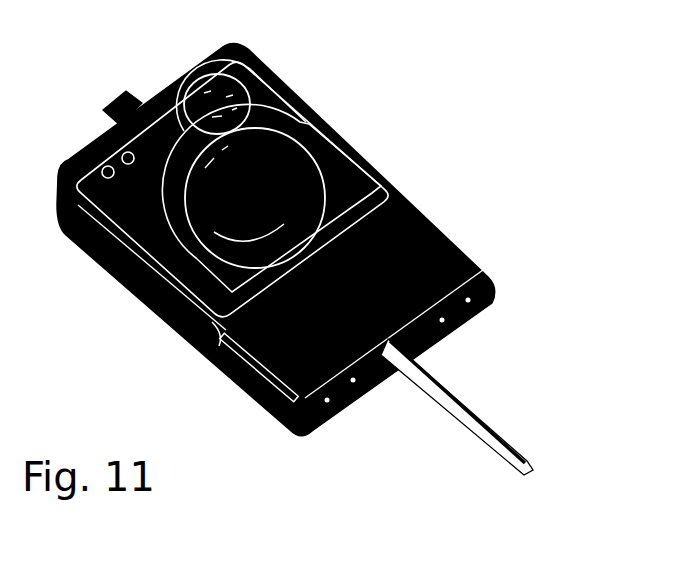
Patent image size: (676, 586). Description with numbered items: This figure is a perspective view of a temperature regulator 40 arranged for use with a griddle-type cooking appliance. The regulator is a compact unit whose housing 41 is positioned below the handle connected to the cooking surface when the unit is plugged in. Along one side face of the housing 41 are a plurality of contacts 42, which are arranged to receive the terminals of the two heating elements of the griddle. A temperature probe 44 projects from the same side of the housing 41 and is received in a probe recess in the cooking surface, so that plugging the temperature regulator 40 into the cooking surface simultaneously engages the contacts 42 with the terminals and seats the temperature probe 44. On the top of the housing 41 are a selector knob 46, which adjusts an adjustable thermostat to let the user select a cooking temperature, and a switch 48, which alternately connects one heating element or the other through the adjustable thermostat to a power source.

The temperature regulator 40 is at (424, 191).
The housing 41 is at (200, 348).
The contacts 42 is at (450, 322).
The temperature probe 44 is at (475, 421).
The selector knob 46 is at (324, 113).
The switch 48 is at (263, 60).